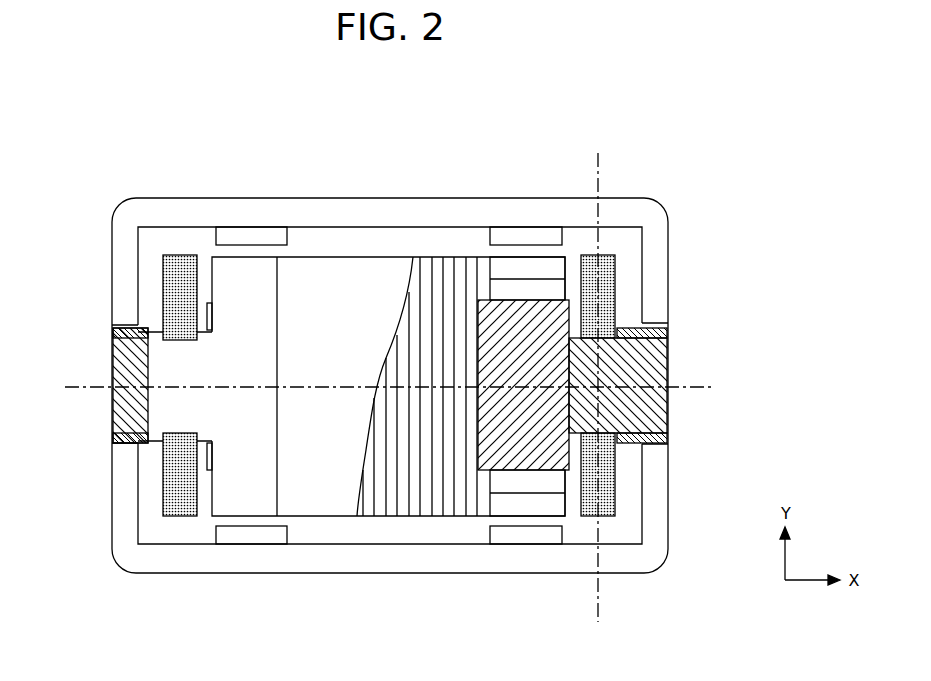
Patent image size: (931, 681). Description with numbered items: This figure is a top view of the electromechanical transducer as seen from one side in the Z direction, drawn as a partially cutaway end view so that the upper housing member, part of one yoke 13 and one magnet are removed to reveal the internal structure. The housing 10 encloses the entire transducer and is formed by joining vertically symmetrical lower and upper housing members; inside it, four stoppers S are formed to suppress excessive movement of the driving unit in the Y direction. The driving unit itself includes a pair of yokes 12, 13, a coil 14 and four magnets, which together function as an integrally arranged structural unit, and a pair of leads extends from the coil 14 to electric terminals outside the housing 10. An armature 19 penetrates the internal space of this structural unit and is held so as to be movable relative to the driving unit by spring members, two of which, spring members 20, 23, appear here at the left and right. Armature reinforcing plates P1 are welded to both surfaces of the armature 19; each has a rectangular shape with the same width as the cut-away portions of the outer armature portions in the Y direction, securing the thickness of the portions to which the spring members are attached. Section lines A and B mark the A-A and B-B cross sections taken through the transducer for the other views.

The housing 10 is at (411, 213).
The yoke 12 is at (533, 268).
The yoke 13 is at (327, 270).
The coil 14 is at (414, 497).
The armature 19 is at (546, 460).
The spring member 20 is at (600, 300).
The spring member 23 is at (178, 299).
The stopper S is at (252, 235).
The armature reinforcing plate P1 is at (125, 358).
The A-A cross section A is at (390, 386).
The B-B cross section B is at (598, 389).